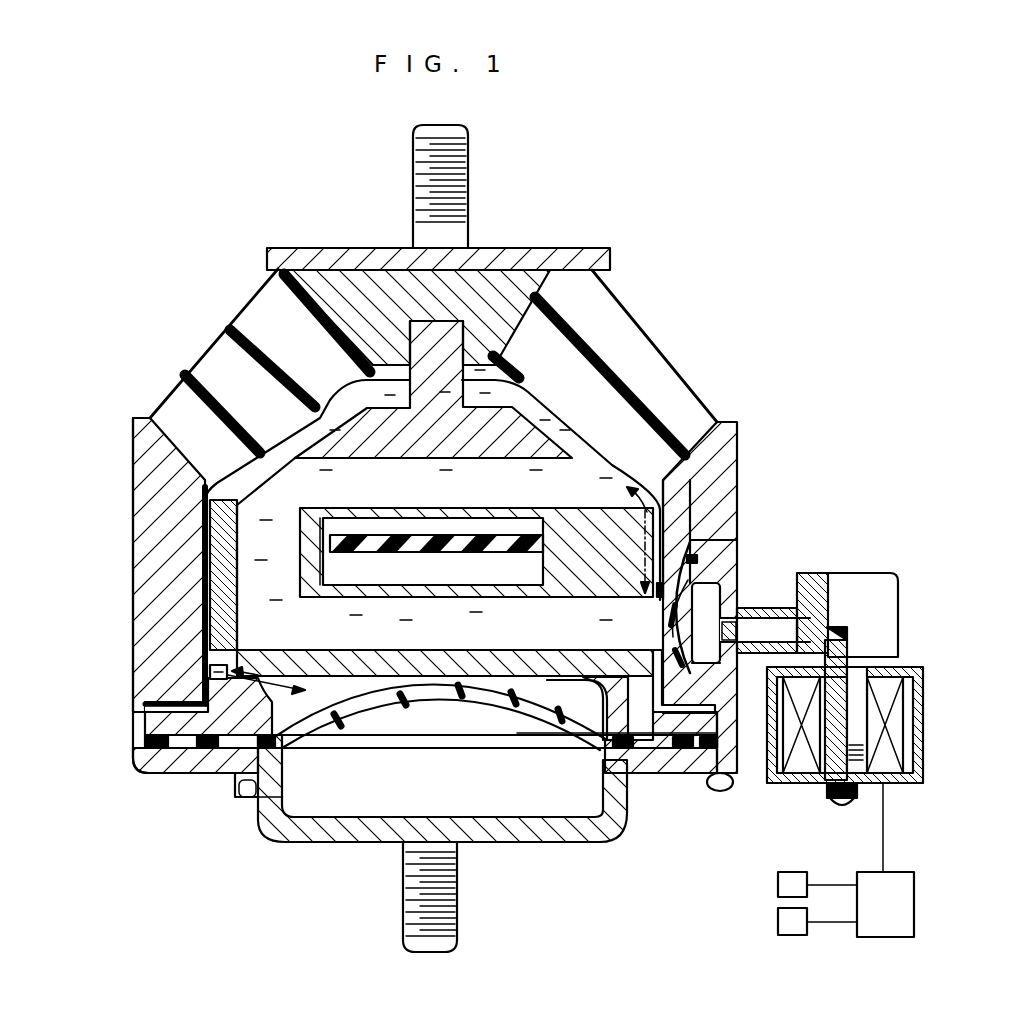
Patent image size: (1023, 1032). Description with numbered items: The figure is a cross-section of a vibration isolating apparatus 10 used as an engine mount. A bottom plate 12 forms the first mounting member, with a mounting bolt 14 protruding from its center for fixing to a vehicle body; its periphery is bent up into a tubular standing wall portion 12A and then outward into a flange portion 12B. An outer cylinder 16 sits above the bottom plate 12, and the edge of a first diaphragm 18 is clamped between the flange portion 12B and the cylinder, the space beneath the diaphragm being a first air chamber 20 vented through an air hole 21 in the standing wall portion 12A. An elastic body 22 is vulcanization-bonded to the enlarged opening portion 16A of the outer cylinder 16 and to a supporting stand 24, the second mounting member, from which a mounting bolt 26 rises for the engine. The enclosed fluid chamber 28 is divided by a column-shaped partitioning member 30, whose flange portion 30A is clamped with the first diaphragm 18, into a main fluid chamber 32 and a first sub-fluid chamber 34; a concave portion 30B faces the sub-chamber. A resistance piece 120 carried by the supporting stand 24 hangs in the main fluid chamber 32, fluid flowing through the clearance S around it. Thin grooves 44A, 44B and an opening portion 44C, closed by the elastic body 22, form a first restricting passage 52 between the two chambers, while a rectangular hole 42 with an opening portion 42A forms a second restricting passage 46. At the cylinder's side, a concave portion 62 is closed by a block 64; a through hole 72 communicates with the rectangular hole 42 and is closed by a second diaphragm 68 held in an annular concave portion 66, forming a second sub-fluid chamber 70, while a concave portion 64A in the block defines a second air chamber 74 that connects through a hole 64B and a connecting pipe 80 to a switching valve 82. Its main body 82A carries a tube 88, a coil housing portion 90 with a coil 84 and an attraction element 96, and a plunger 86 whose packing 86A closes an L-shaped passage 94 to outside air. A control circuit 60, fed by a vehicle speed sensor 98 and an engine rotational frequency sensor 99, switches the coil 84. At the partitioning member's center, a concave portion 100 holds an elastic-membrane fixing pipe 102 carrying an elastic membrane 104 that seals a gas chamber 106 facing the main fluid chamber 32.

The vibration isolating apparatus 10 is at (657, 186).
The bottom plate 12 is at (308, 845).
The standing wall portion 12A is at (234, 803).
The flange portion 12B is at (183, 773).
The mounting bolt 14 is at (403, 882).
The outer cylinder 16 is at (133, 485).
The enlarged opening portion 16A is at (703, 437).
The first diaphragm 18 is at (497, 740).
The first air chamber 20 is at (440, 733).
The air hole 21 is at (227, 783).
The elastic body 22 is at (253, 305).
The supporting stand 24 is at (333, 247).
The mounting bolt 26 is at (413, 192).
The fluid chamber 28 is at (280, 448).
The partitioning member 30 is at (223, 558).
The flange portion 30A is at (155, 713).
The concave portion 30B is at (595, 713).
The main fluid chamber 32 is at (415, 493).
The first sub-fluid chamber 34 is at (577, 713).
The rectangular hole 42 is at (530, 733).
The opening portion 42A is at (295, 522).
The thin groove 44A is at (627, 668).
The thin groove 44B is at (627, 614).
The opening portion 44C is at (273, 707).
The second restricting passage 46 is at (318, 633).
The first restricting passage 52 is at (657, 700).
The control circuit 60 is at (914, 905).
The concave portion 62 is at (730, 538).
The block 64 is at (712, 668).
The concave portion 64A is at (703, 700).
The hole 64B is at (750, 608).
The annular concave portion 66 is at (689, 552).
The second diaphragm 68 is at (720, 612).
The second sub-fluid chamber 70 is at (680, 690).
The through hole 72 is at (625, 598).
The second air chamber 74 is at (736, 820).
The connecting pipe 80 is at (770, 608).
The switching valve 82 is at (908, 556).
The main body 82A is at (898, 632).
The coil 84 is at (895, 737).
The plunger 86 is at (848, 643).
The packing 86A is at (848, 632).
The tube 88 is at (855, 700).
The coil housing portion 90 is at (910, 767).
The L-shaped passage 94 is at (785, 637).
The attraction element 96 is at (818, 790).
The vehicle speed sensor 98 is at (778, 884).
The engine rotational frequency sensor 99 is at (778, 921).
The concave portion 100 is at (507, 508).
The elastic-membrane fixing pipe 102 is at (540, 630).
The elastic membrane 104 is at (490, 490).
The gas chamber 106 is at (446, 578).
The resistance piece 120 is at (565, 388).
The clearance S is at (318, 425).